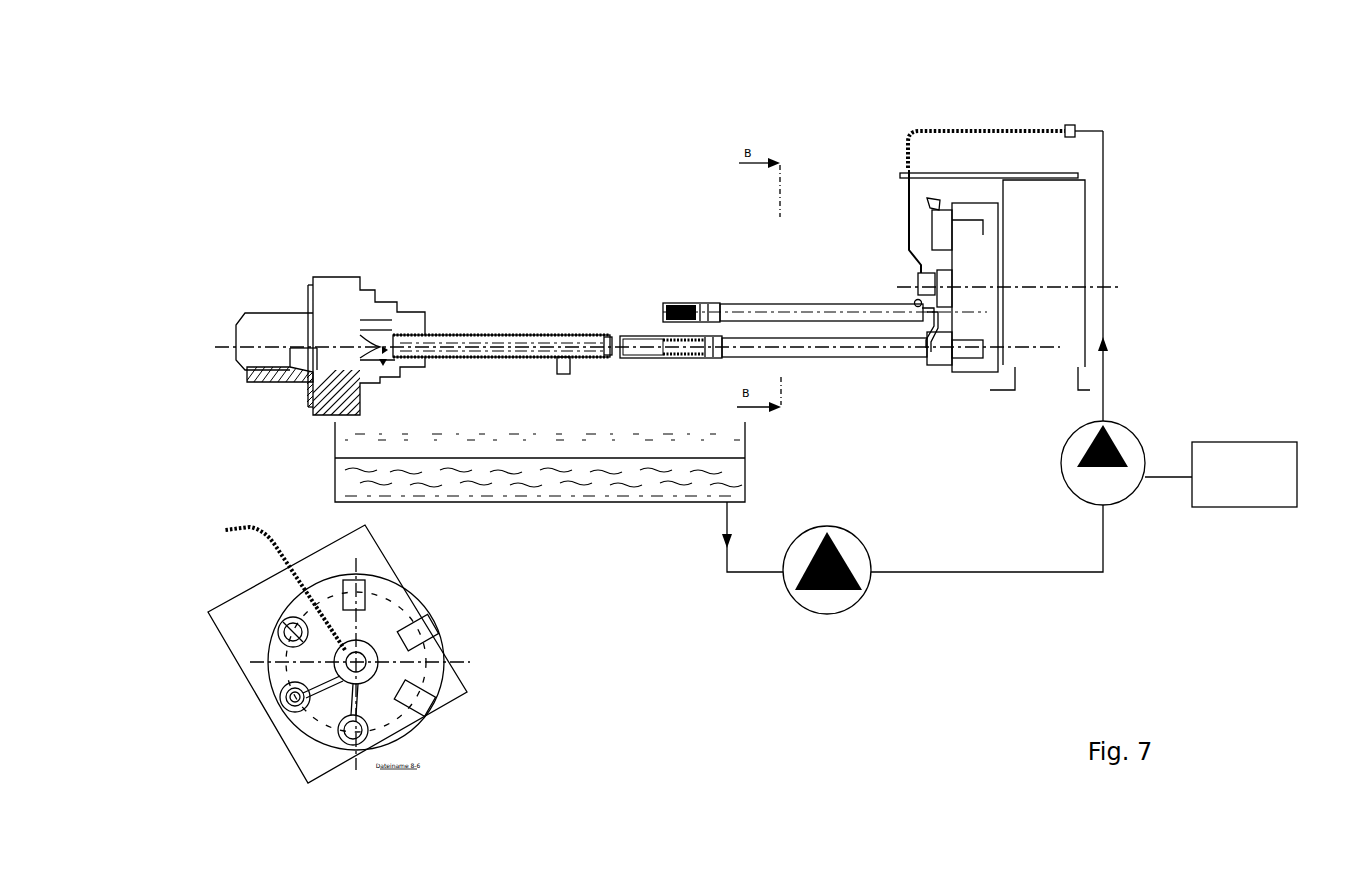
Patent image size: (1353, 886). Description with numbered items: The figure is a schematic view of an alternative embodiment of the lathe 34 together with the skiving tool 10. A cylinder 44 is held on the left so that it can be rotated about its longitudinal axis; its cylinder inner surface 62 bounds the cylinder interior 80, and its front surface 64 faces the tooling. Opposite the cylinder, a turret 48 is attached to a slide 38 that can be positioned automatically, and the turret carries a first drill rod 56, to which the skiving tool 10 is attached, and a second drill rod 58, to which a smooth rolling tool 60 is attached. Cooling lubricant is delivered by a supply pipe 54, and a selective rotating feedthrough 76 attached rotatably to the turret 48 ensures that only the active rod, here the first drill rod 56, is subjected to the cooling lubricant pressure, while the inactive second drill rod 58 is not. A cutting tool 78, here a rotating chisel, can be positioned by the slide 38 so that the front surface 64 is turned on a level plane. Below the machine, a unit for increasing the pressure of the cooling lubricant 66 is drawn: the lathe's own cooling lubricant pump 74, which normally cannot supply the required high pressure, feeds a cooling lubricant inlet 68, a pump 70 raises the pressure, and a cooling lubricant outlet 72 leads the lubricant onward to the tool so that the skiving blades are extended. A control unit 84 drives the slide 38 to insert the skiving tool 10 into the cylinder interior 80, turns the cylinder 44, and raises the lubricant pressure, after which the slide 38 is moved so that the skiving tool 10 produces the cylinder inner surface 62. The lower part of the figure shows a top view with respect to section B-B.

The lathe 34 is at (345, 205).
The cylinder 44 is at (452, 335).
The cylinder inner surface 62 is at (490, 350).
The cylinder interior 80 is at (538, 343).
The front surface 64 is at (612, 340).
The smooth rolling tool 60 is at (702, 303).
The second drill rod 58 is at (806, 304).
The skiving tool 10 is at (658, 352).
The first drill rod 56 is at (820, 357).
The rotating feedthrough 76 is at (967, 367).
The turret 48 is at (1057, 220).
The cutting tool 78 is at (933, 207).
The slide 38 is at (1040, 388).
The cooling lubricant outlet 72 is at (1103, 398).
The pump 70 is at (1062, 472).
The cooling lubricant inlet 68 is at (1105, 503).
The cooling lubricant pump 74 is at (838, 525).
The unit for increasing the pressure of the cooling lubricant 66 is at (1165, 430).
The control unit 84 is at (1244, 474).
The supply pipe 54 is at (240, 520).